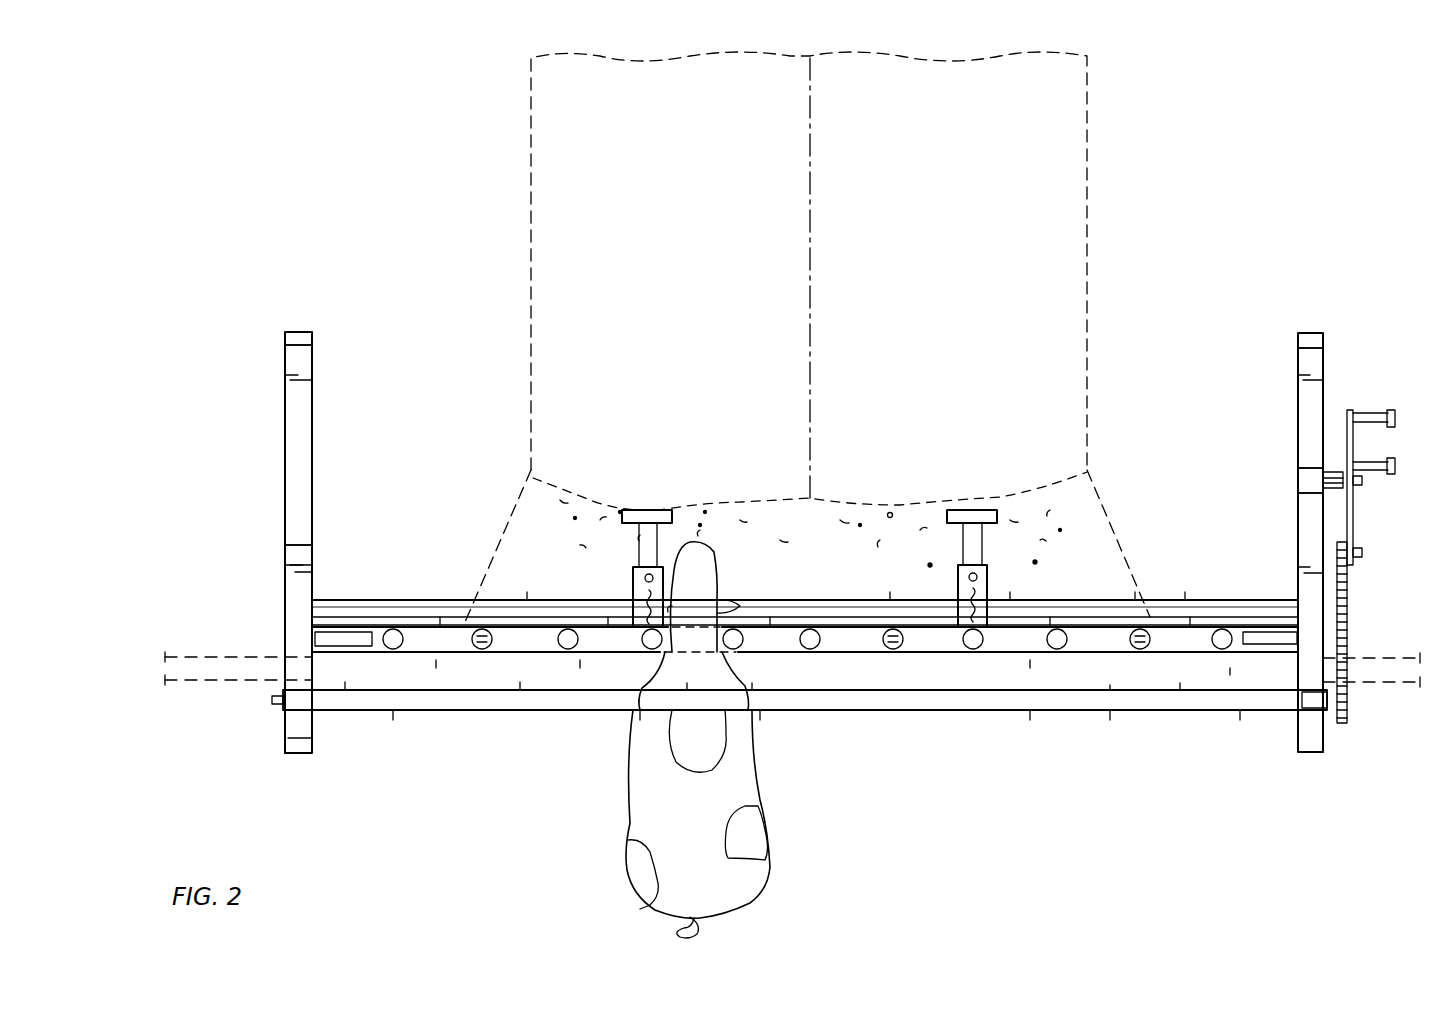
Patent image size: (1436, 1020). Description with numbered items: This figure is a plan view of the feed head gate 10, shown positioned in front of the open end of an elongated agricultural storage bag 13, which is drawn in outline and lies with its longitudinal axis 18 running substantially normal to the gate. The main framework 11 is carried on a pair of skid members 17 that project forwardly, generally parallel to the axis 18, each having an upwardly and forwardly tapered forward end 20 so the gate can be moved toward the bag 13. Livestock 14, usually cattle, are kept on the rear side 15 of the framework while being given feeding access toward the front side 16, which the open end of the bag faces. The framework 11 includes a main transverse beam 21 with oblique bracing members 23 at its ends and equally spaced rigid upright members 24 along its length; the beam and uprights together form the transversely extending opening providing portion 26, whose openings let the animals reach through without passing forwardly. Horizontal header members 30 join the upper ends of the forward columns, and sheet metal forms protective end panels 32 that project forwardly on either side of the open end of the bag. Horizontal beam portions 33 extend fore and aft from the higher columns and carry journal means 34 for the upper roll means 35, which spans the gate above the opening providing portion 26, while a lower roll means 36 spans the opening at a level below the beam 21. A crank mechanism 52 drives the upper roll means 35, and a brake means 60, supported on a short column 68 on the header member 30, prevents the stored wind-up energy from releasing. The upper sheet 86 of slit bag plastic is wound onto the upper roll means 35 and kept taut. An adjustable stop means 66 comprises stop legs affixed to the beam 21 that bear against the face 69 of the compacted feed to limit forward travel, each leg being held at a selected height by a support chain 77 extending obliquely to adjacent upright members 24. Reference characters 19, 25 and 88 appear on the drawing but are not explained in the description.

The feed head gate 10 is at (1150, 540).
The main framework 11 is at (1227, 590).
The elongated agricultural storage bag 13 is at (1092, 190).
The livestock 14 is at (733, 785).
The rear side 15 is at (899, 670).
The front side 16 is at (829, 580).
The skid member 17 is at (285, 740).
The longitudinal axis 18 is at (810, 158).
The right end post base 19 is at (1325, 742).
The tapered forward end 20 is at (297, 332).
The main transverse beam 21 is at (450, 640).
The oblique bracing member 23 is at (338, 632).
The rigid upright member 24 is at (975, 650).
The roller carriage 25 is at (1027, 645).
The transversely extending opening providing portion 26 is at (832, 655).
The horizontal header member 30 is at (300, 460).
The protective end panel 32 is at (290, 553).
The horizontal beam portion 33 is at (295, 627).
The journal means 34 is at (297, 700).
The upper roll means 35 is at (1238, 712).
The lower roll means 36 is at (415, 598).
The crank mechanism 52 is at (1362, 541).
The brake means 60 is at (1333, 488).
The adjustable stop means 66 is at (647, 508).
The short column 68 is at (1310, 480).
The face of the compacted feed 69 is at (878, 506).
The support chain 77 is at (647, 597).
The upper sheet 86 is at (1075, 547).
The extension line 88 is at (215, 657).